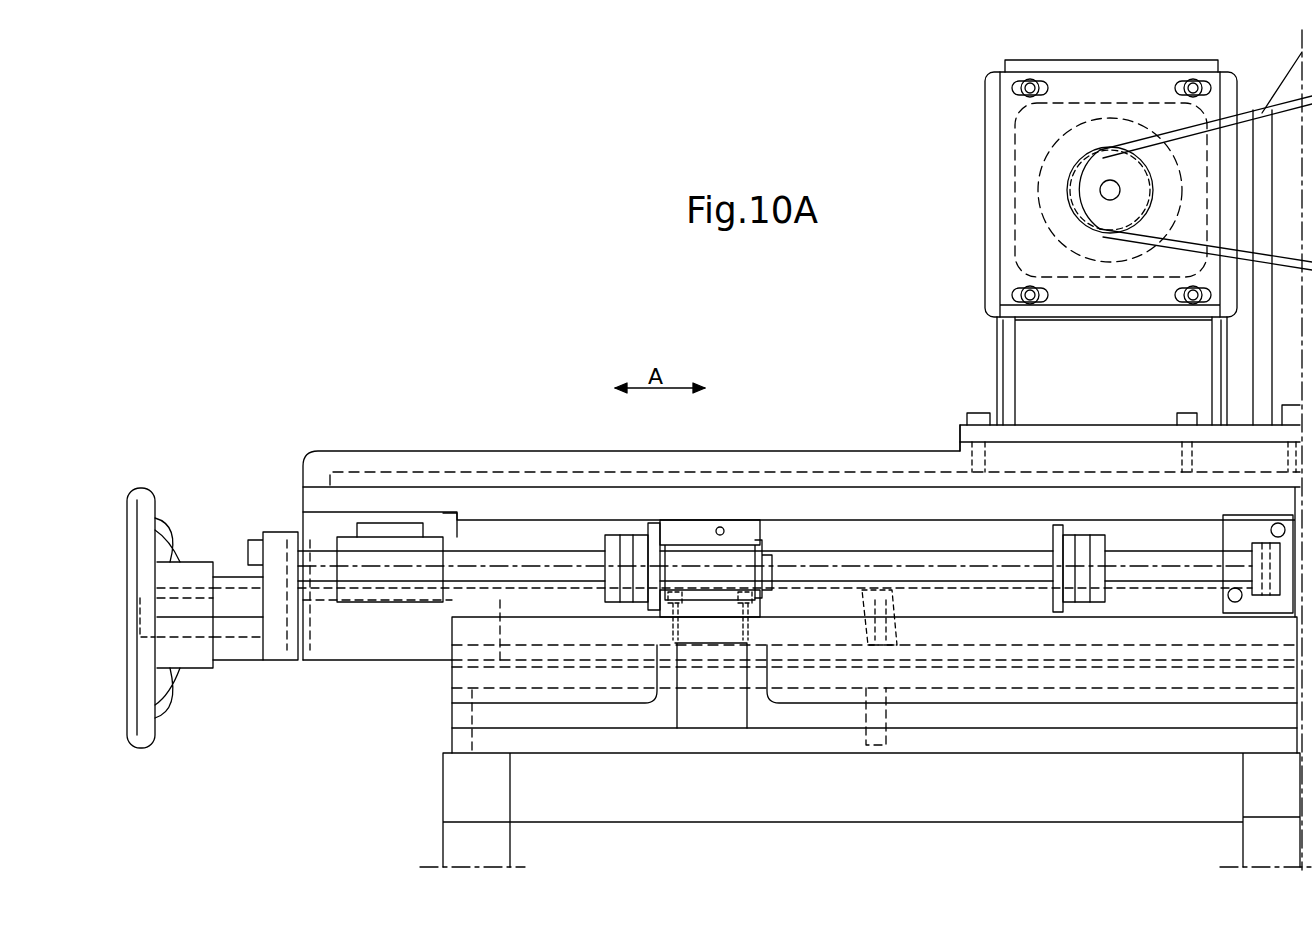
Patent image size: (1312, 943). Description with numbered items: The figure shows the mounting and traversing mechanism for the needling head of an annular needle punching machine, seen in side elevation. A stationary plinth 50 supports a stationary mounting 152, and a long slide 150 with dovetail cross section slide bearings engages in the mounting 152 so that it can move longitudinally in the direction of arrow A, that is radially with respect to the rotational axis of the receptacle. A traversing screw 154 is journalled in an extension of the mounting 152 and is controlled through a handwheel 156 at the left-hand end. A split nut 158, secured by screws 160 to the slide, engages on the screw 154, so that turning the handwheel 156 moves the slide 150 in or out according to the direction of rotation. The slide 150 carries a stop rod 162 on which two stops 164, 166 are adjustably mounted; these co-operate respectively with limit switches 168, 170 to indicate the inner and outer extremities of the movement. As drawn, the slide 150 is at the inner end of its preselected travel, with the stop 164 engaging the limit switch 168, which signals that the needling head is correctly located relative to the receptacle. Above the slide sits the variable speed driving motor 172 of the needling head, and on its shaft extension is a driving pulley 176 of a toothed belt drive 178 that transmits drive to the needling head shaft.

The stationary plinth 50 is at (860, 800).
The slide 150 is at (828, 460).
The stationary mounting 152 is at (447, 680).
The traversing screw 154 is at (893, 625).
The handwheel 156 is at (152, 510).
The split nut 158 is at (756, 632).
The screws 160 is at (656, 640).
The stop rod 162 is at (942, 557).
The stop 164 is at (640, 525).
The stop 166 is at (1065, 535).
The limit switch 168 is at (694, 530).
The limit switch 170 is at (766, 550).
The variable speed driving motor 172 is at (1000, 265).
The driving pulley 176 is at (1068, 190).
The toothed belt drive 178 is at (1268, 105).